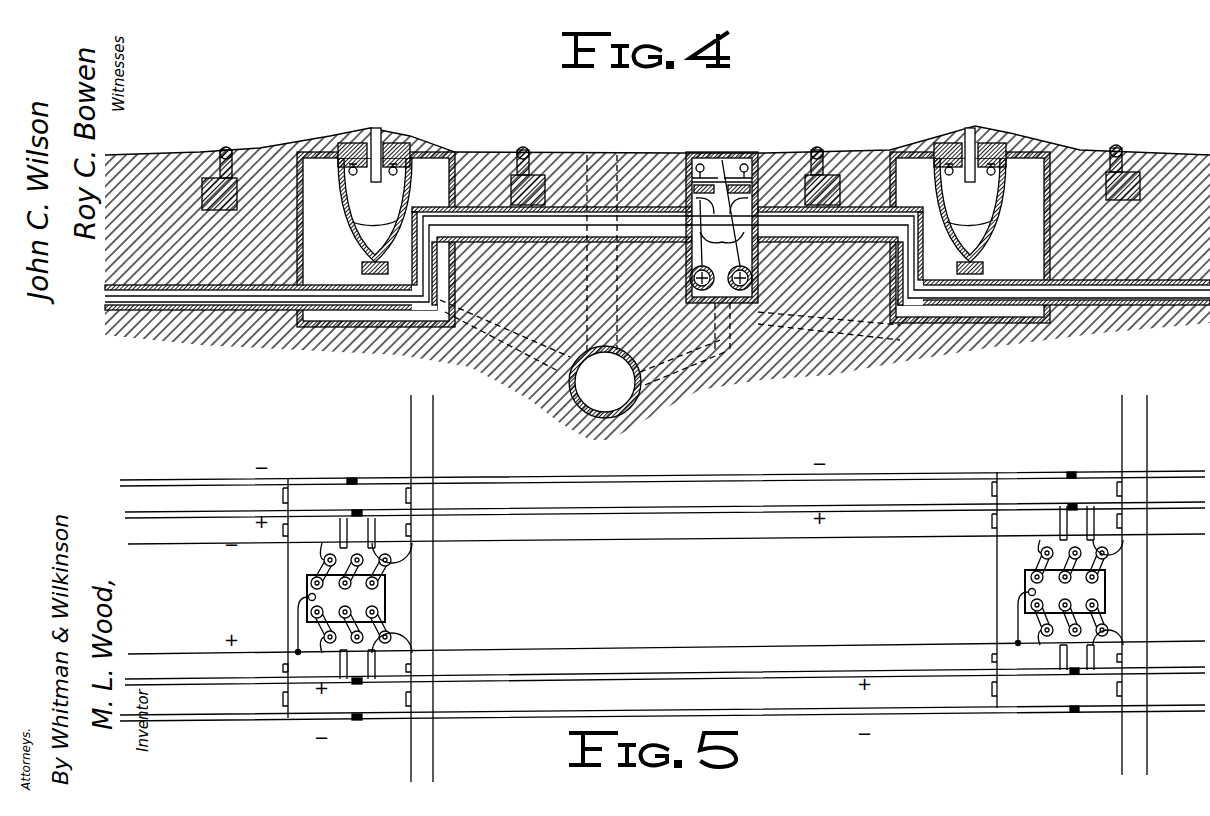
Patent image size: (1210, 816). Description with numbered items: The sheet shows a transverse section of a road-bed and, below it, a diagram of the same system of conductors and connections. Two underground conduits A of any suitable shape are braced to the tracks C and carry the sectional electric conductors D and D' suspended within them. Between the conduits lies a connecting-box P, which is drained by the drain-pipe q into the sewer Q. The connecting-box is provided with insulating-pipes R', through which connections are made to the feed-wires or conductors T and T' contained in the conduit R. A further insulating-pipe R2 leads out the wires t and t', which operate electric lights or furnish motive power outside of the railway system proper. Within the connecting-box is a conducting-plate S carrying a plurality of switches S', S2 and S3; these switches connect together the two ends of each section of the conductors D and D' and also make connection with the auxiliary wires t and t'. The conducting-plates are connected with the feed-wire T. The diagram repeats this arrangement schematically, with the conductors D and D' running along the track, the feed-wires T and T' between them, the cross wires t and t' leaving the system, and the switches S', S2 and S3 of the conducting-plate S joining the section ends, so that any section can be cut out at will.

In FIG. 4, the connecting-box P is at (300, 162).
In FIG. 4, the tracks C is at (228, 148).
In FIG. 4, the conductor D is at (673, 239).
In FIG. 5, the conductor D is at (665, 593).
In FIG. 4, the conductor D' is at (685, 169).
In FIG. 5, the conductor D' is at (662, 584).
In FIG. 4, the underground conduit A is at (352, 228).
In FIG. 4, the conduit R is at (657, 211).
In FIG. 4, the insulating-pipes R' is at (597, 229).
In FIG. 4, the insulating-pipe R2 is at (110, 312).
In FIG. 4, the conducting-plate S is at (722, 215).
In FIG. 5, the conducting-plate S is at (707, 595).
In FIG. 4, the feed-wire T is at (759, 289).
In FIG. 5, the feed-wire T is at (666, 635).
In FIG. 4, the feed-wire T' is at (721, 310).
In FIG. 5, the feed-wire T' is at (666, 550).
In FIG. 4, the sewer Q is at (605, 382).
In FIG. 4, the drain-pipe q is at (520, 366).
In FIG. 4, the auxiliary wire t is at (98, 320).
In FIG. 5, the auxiliary wire t is at (759, 576).
In FIG. 4, the auxiliary wire t' is at (643, 310).
In FIG. 5, the auxiliary wire t' is at (799, 576).
In FIG. 5, the switch S' is at (679, 599).
In FIG. 5, the switch S2 is at (355, 553).
In FIG. 5, the switch S3 is at (386, 553).